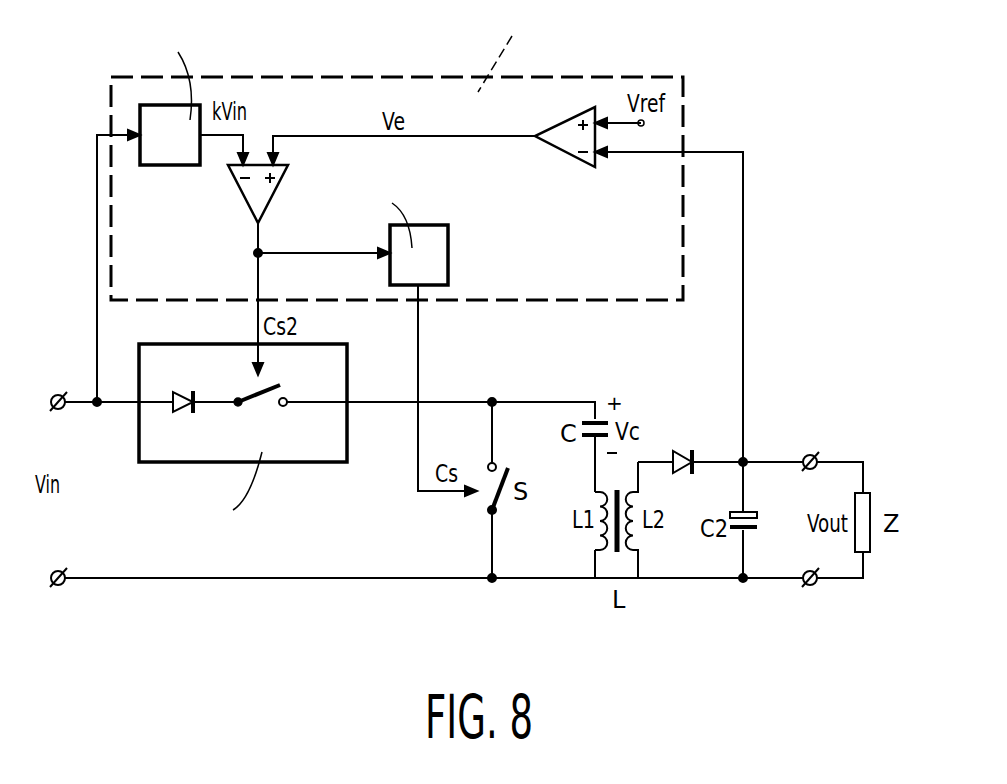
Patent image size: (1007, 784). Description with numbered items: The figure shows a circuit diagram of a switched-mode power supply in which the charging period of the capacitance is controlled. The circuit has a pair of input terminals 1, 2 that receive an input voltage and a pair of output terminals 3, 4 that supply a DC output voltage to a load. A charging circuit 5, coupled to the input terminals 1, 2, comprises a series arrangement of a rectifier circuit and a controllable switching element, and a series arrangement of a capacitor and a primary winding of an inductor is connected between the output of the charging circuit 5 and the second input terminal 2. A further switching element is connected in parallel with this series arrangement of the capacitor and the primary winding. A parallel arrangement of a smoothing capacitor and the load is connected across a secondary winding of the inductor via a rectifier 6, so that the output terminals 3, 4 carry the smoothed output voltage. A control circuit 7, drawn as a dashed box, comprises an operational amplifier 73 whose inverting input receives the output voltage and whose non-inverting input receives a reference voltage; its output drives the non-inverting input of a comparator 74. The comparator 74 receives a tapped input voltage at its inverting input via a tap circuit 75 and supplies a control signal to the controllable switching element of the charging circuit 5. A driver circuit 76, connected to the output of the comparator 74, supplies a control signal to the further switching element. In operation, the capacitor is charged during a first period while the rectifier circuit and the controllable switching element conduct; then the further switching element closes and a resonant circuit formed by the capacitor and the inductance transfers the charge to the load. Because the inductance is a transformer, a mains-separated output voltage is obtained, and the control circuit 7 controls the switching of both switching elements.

The input terminal 1 is at (54, 393).
The input terminal 2 is at (60, 586).
The output terminal 3 is at (806, 454).
The output terminal 4 is at (814, 588).
The charging circuit 5 is at (172, 348).
The rectifier 6 is at (679, 448).
The control circuit 7 is at (111, 77).
The operational amplifier 73 is at (566, 124).
The comparator 74 is at (276, 186).
The tap circuit 75 is at (178, 112).
The driver circuit 76 is at (448, 243).